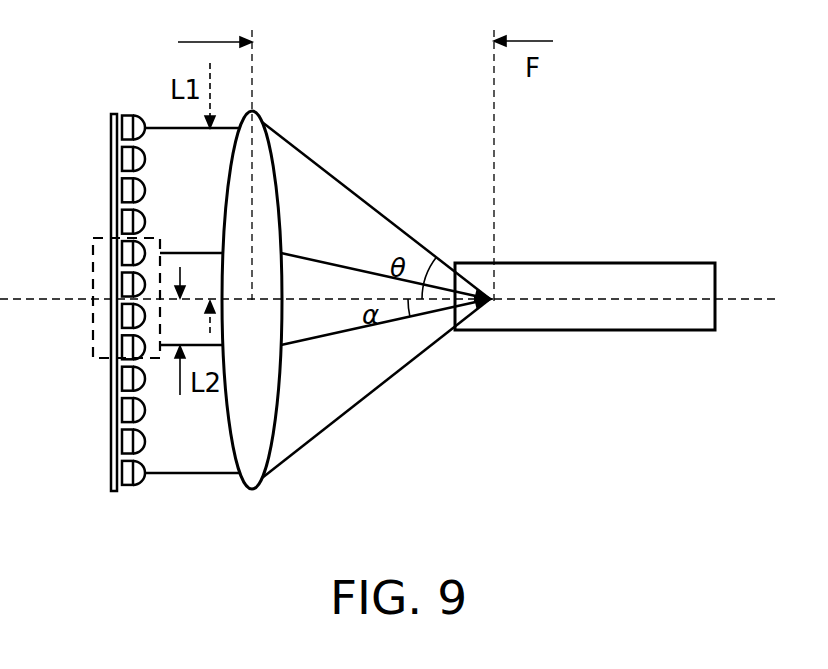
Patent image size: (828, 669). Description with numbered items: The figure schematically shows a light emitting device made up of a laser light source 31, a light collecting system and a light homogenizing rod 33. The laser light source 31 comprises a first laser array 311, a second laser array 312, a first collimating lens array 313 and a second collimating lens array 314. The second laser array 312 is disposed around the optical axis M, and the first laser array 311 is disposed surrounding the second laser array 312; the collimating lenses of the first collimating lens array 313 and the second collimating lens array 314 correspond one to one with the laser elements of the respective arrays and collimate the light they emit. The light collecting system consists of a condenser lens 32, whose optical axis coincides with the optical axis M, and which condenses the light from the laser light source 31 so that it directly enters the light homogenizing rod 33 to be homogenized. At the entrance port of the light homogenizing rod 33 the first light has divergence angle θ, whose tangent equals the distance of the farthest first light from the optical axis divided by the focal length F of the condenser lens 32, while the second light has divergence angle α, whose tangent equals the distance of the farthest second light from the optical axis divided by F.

The laser light source 31 is at (114, 326).
The first laser array 311 is at (118, 192).
The second laser array 312 is at (122, 312).
The first collimating lens array 313 is at (135, 112).
The second collimating lens array 314 is at (118, 260).
The condenser lens 32 is at (265, 488).
The light homogenizing rod 33 is at (598, 310).